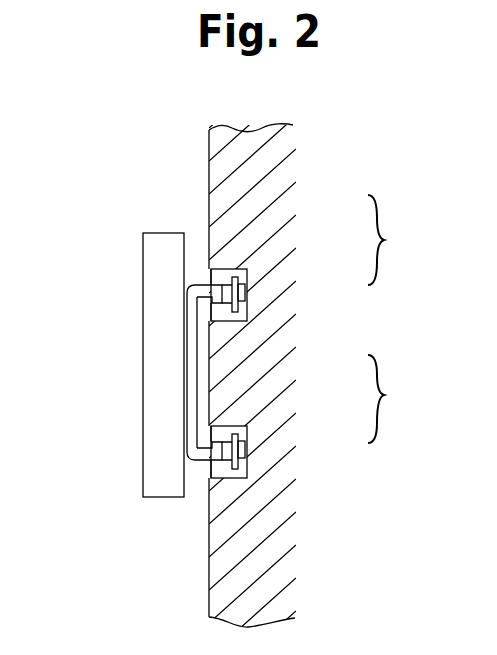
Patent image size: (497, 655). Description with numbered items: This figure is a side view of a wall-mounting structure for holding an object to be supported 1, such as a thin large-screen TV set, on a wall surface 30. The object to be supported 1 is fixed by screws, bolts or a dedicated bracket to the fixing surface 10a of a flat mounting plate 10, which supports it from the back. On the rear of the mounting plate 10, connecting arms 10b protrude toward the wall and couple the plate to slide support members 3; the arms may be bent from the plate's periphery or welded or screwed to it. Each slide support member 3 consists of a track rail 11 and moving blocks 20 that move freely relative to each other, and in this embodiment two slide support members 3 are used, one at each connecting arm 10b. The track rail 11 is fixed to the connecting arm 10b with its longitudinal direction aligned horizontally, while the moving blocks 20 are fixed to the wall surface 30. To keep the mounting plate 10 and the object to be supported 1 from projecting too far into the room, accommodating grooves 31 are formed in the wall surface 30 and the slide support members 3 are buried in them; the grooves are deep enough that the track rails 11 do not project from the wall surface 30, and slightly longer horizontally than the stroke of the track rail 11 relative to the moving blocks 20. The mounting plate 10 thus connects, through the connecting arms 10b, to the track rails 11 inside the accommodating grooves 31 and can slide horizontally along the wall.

The object to be supported 1 is at (143, 290).
The slide support member 3 is at (321, 344).
The mounting plate 10 is at (137, 372).
The fixing surface 10a is at (187, 375).
The connecting arm 10b is at (203, 285).
The track rail 11 is at (247, 295).
The moving block 20 is at (248, 268).
The wall surface 30 is at (205, 152).
The accommodating groove 31 is at (247, 322).